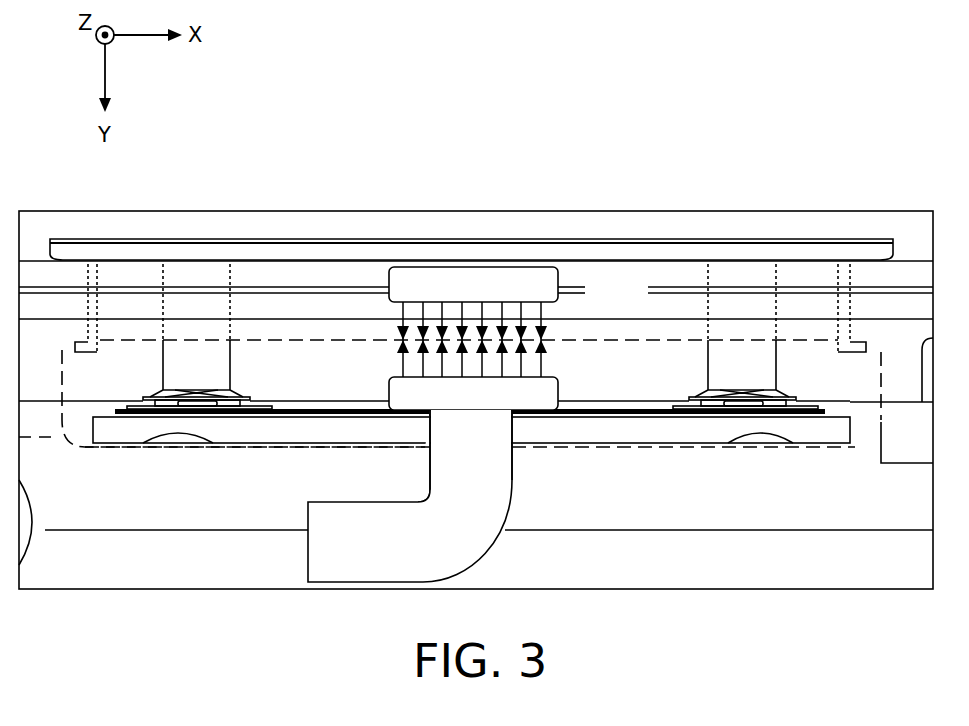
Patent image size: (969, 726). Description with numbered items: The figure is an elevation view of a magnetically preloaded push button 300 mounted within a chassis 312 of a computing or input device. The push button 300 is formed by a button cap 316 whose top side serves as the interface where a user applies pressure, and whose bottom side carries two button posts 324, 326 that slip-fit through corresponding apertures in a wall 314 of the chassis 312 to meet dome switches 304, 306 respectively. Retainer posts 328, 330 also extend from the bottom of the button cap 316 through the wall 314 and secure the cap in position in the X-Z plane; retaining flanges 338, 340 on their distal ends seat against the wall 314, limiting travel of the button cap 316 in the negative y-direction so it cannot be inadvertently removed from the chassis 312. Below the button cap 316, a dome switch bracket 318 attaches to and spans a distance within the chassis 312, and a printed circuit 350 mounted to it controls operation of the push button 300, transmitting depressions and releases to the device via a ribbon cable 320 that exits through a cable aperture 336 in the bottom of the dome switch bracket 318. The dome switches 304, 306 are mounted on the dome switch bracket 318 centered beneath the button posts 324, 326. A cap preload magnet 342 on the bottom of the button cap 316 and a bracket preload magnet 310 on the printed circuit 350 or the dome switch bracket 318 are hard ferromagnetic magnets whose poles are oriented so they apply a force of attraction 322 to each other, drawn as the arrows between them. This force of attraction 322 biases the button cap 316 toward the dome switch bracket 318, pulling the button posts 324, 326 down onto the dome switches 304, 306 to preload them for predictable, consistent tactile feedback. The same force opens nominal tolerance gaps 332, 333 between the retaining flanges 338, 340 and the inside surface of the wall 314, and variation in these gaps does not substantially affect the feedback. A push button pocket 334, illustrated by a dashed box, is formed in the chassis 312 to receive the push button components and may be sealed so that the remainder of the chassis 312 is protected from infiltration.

The push button 300 is at (438, 136).
The dome switch 304 is at (190, 393).
The dome switch 306 is at (750, 393).
The bracket preload magnet 310 is at (494, 401).
The chassis 312 is at (635, 499).
The wall 314 is at (640, 303).
The button cap 316 is at (532, 250).
The dome switch bracket 318 is at (683, 430).
The ribbon cable 320 is at (413, 552).
The force of attraction 322 is at (472, 357).
The button post 324 is at (218, 376).
The button post 326 is at (763, 376).
The retainer post 328 is at (92, 310).
The retainer post 330 is at (847, 310).
The tolerance gap 332 is at (66, 342).
The tolerance gap 333 is at (884, 342).
The push button pocket 334 is at (270, 447).
The cable aperture 336 is at (475, 441).
The retaining flange 338 is at (86, 352).
The retaining flange 340 is at (864, 352).
The cap preload magnet 342 is at (494, 297).
The printed circuit 350 is at (340, 410).